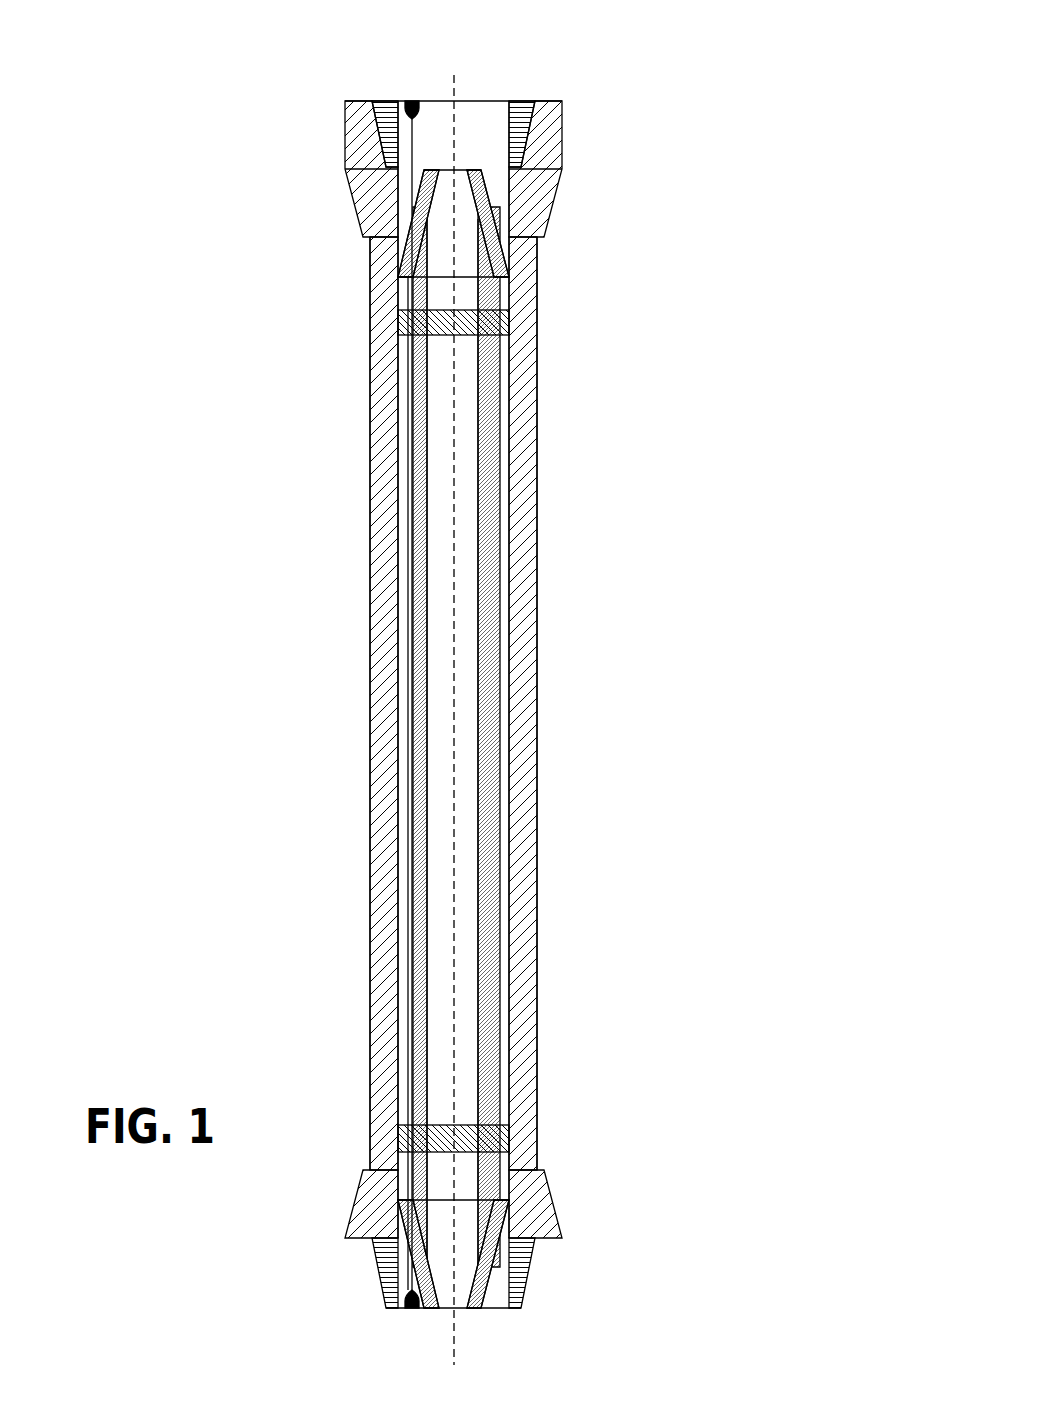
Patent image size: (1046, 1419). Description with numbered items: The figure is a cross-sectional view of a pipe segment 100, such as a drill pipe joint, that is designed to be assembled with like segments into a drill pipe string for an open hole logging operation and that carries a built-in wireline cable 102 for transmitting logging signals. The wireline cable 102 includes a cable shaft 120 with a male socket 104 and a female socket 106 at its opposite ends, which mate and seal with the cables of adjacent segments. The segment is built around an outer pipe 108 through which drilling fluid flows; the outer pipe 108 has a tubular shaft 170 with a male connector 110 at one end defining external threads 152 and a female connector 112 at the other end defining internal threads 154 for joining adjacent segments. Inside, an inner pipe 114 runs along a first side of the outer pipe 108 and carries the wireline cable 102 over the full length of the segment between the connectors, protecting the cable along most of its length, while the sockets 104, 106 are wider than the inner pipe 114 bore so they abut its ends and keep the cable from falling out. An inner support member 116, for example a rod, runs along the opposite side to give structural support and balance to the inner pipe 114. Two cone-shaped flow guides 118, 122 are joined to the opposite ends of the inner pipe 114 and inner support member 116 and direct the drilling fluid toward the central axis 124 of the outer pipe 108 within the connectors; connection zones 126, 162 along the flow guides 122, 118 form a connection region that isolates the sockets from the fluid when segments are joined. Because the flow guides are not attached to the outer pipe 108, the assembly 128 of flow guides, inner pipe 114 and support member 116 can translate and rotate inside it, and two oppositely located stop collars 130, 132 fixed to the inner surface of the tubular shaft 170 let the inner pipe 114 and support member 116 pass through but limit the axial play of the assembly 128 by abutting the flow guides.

The pipe segment 100 is at (705, 353).
The wireline cable 102 is at (412, 637).
The male socket 104 is at (412, 1310).
The female socket 106 is at (412, 100).
The outer pipe 108 is at (603, 572).
The male connector 110 is at (545, 1185).
The female connector 112 is at (552, 145).
The inner pipe 114 is at (430, 452).
The inner support member 116 is at (500, 820).
The flow guide 118 is at (487, 198).
The cable shaft 120 is at (412, 637).
The flow guide 122 is at (503, 1237).
The central axis 124 is at (457, 78).
The connection zone 126 is at (407, 195).
The assembly 128 is at (522, 1035).
The stop collar 130 is at (437, 335).
The stop collar 132 is at (452, 1130).
The external threads 152 is at (380, 1268).
The internal threads 154 is at (377, 137).
The connection zone 162 is at (500, 1279).
The tubular shaft 170 is at (527, 622).